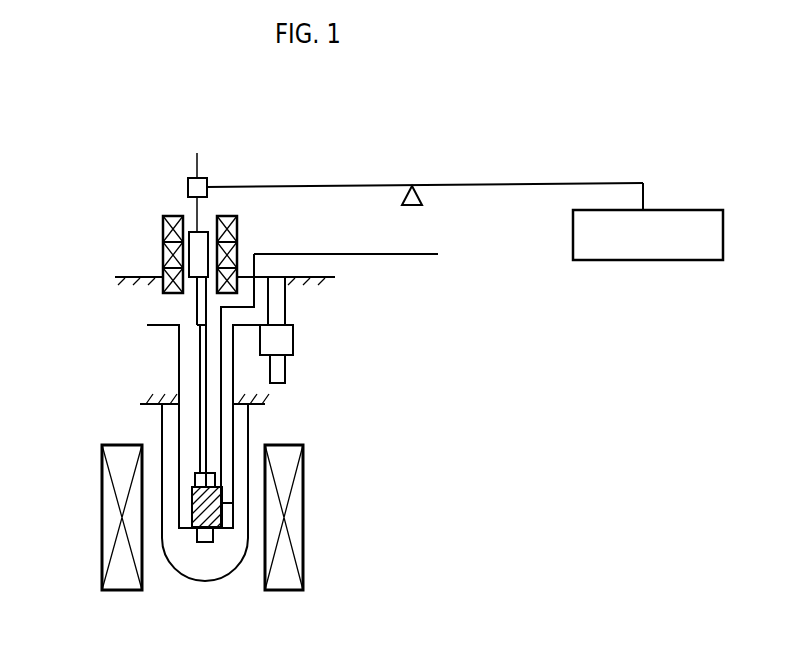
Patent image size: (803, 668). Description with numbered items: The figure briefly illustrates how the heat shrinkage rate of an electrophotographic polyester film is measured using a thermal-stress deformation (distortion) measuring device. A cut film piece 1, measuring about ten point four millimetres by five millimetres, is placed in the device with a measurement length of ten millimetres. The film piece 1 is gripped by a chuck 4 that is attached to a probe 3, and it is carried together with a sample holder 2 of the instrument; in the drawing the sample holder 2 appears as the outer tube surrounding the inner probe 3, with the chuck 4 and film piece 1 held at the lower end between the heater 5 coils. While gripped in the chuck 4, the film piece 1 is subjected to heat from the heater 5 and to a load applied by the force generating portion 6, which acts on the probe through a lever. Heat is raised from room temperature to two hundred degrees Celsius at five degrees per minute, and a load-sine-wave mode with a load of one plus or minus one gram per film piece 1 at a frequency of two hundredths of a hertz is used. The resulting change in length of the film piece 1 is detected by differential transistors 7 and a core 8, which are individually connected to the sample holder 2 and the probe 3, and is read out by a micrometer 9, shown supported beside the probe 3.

The film piece 1 is at (196, 503).
The sample holder 2 is at (178, 422).
The probe 3 is at (200, 341).
The chuck 4 is at (213, 478).
The heater 5 is at (102, 537).
The force generating portion 6 is at (584, 248).
The differential transistors 7 is at (163, 252).
The core 8 is at (204, 232).
The micrometer 9 is at (286, 342).